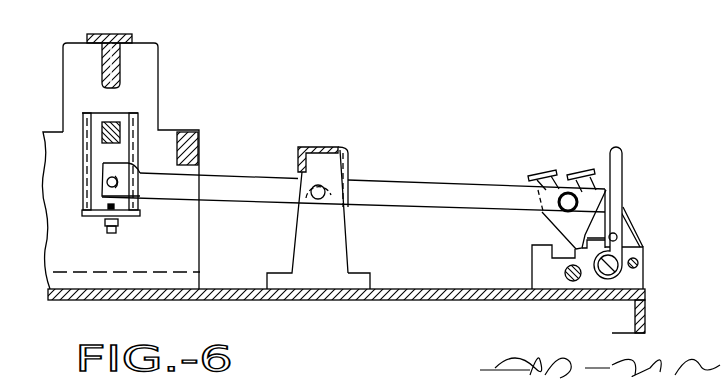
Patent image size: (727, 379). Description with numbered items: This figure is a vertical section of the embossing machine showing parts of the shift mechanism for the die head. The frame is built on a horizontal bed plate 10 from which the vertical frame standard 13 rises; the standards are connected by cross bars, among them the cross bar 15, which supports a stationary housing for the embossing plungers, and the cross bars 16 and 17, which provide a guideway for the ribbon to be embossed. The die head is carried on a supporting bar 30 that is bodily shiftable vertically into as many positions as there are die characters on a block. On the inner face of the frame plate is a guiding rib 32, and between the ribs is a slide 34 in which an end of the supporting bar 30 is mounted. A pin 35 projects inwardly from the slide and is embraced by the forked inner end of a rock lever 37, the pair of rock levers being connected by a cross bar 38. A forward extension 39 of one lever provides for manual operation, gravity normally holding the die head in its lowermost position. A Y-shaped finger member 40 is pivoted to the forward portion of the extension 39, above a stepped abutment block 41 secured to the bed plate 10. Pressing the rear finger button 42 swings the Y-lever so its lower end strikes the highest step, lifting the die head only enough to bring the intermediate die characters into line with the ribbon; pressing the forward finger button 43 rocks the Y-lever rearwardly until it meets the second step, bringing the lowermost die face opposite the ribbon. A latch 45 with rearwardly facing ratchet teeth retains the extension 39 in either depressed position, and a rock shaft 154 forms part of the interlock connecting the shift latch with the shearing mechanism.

The bed plate 10 is at (432, 290).
The frame standard 13 is at (152, 72).
The cross bar 15 is at (207, 118).
The cross bar 16 is at (102, 33).
The cross bar 17 is at (133, 35).
The supporting bar 30 is at (112, 122).
The guiding rib 32 is at (85, 114).
The slide 34 is at (98, 155).
The pin 35 is at (106, 182).
The rock lever 37 is at (240, 190).
The cross bar 38 is at (323, 147).
The forward extension 39 is at (452, 190).
The Y-shaped finger member 40 is at (570, 223).
The stepped abutment block 41 is at (532, 257).
The finger button 42 is at (537, 168).
The finger button 43 is at (584, 165).
The latch 45 is at (623, 178).
The rock shaft 154 is at (573, 283).